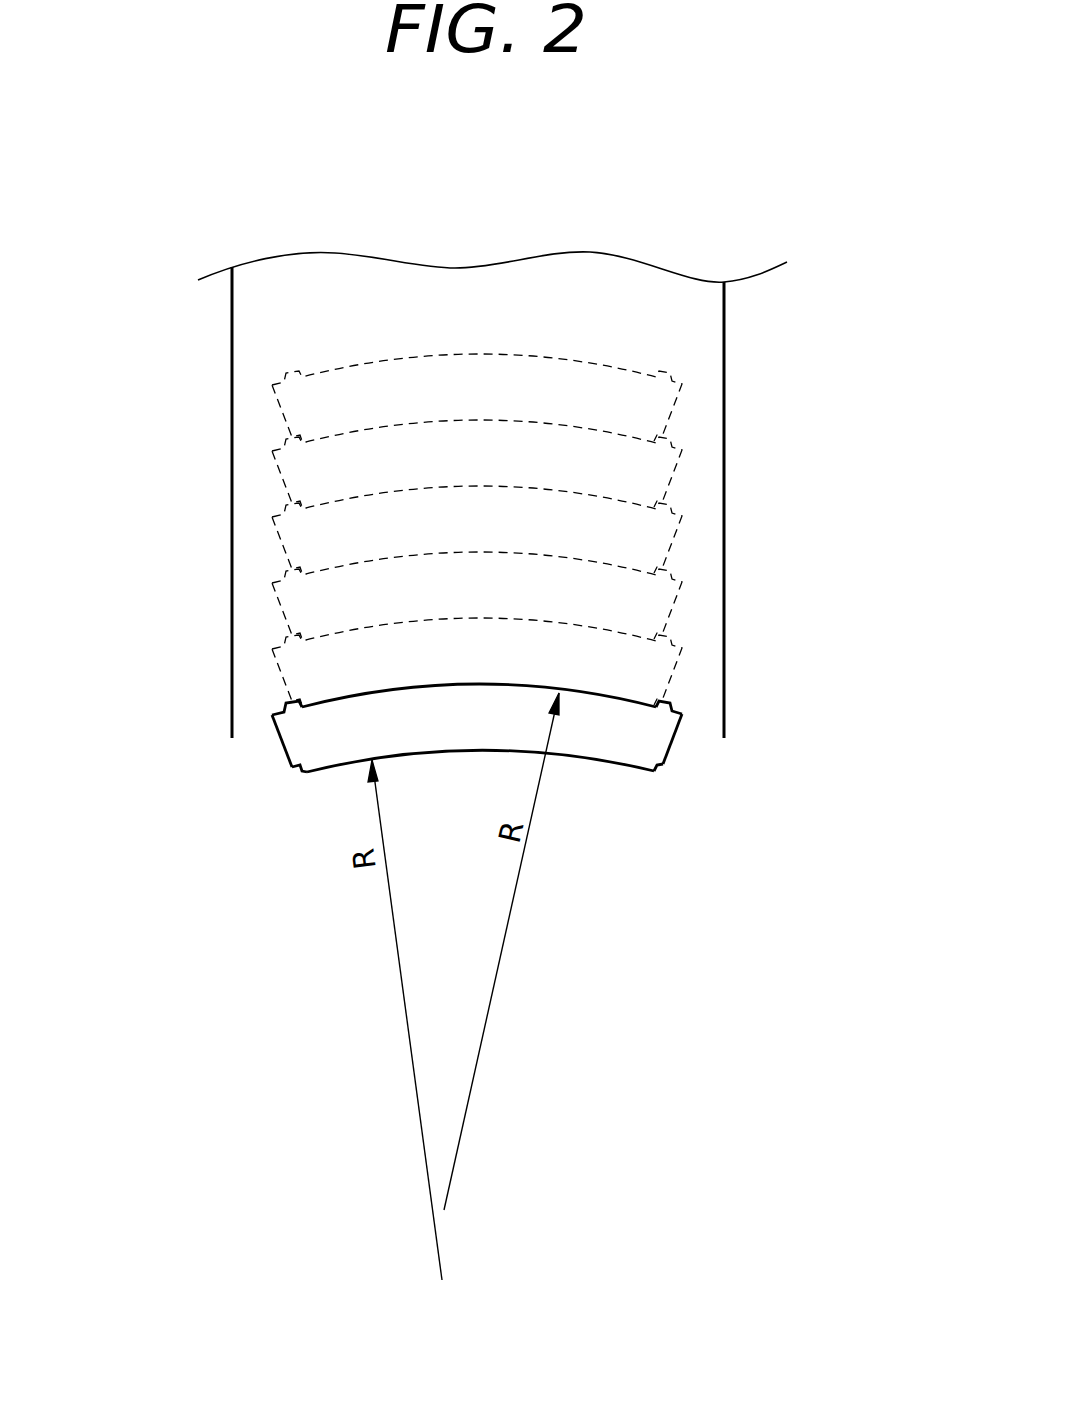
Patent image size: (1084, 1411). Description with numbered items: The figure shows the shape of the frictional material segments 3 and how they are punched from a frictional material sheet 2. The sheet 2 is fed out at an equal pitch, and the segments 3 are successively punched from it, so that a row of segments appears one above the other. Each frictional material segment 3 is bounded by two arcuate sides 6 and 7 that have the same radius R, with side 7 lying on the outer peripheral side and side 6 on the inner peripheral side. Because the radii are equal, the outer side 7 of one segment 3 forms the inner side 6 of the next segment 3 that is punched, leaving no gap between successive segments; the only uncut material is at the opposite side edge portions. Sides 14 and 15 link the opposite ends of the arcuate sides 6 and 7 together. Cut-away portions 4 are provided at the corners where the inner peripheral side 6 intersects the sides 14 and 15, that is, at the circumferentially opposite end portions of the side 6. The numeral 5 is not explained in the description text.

The frictional material sheet 2 is at (707, 212).
The frictional material segment 3 is at (525, 766).
The cut-away portion 4 is at (297, 772).
The notch 5 is at (657, 707).
The inner peripheral side 6 is at (588, 762).
The outer peripheral side 7 is at (638, 703).
The side 14 is at (280, 742).
The side 15 is at (672, 752).